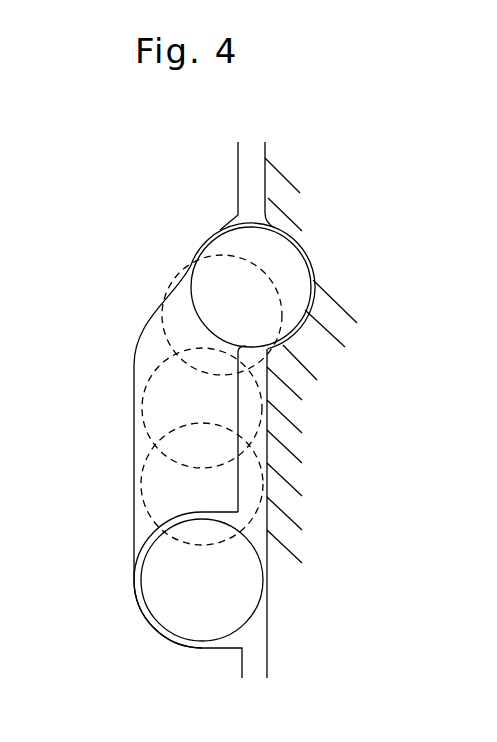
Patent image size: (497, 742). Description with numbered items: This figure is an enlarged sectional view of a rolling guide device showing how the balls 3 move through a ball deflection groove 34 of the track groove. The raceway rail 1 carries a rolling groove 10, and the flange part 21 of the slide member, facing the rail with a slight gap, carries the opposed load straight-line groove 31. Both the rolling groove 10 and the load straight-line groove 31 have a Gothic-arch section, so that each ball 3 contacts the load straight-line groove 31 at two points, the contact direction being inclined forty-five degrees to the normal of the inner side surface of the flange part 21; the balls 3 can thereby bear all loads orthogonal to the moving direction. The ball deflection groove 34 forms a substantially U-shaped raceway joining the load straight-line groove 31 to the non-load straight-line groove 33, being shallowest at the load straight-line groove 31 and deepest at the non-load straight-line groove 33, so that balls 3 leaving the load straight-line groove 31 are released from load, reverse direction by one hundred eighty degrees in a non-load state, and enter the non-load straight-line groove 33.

The raceway rail 1 is at (267, 655).
The flange part 21 is at (238, 166).
The load straight-line groove 31 is at (198, 262).
The rolling groove 10 is at (300, 256).
The ball 3 is at (296, 315).
The ball deflection groove 34 is at (143, 506).
The non-load straight-line groove 33 is at (148, 618).